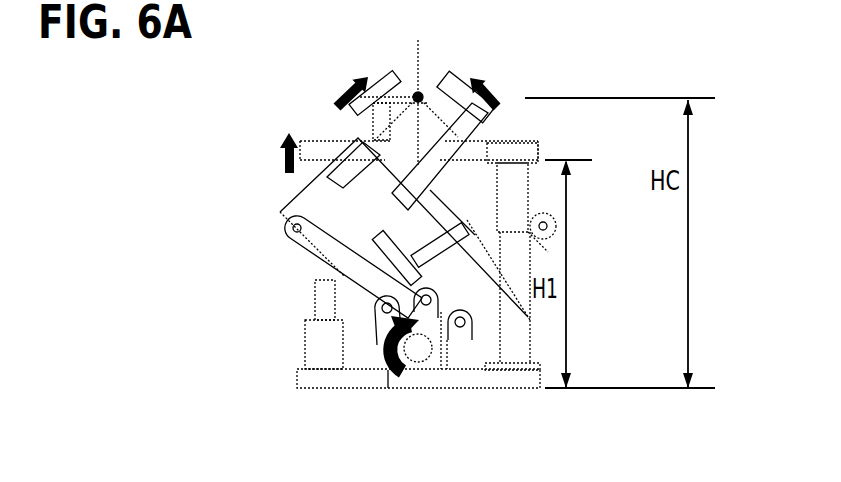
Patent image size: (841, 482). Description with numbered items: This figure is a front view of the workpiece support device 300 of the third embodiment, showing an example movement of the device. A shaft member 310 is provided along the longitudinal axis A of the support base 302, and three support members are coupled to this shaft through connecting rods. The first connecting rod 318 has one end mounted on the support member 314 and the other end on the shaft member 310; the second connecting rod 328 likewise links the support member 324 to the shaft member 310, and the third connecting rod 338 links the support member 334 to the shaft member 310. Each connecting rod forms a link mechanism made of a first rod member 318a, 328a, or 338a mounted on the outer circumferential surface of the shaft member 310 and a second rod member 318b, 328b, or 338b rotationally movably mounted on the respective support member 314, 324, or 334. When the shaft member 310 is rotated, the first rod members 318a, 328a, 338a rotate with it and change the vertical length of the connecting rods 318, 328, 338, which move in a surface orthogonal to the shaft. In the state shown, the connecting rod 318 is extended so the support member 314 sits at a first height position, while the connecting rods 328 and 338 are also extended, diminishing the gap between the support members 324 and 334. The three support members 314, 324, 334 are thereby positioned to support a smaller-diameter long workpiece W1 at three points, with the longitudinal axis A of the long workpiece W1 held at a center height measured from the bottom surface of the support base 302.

The workpiece support device 300 is at (556, 75).
The support base 302 is at (533, 377).
The shaft member 310 is at (417, 350).
The support member 314 is at (382, 127).
The connecting rod 318 is at (435, 298).
The first rod member 318a is at (428, 312).
The second rod member 318b is at (420, 198).
The support member 324 is at (383, 87).
The connecting rod 328 is at (547, 224).
The first rod member 328a is at (465, 331).
The second rod member 328b is at (538, 250).
The support member 334 is at (455, 85).
The connecting rod 338 is at (294, 229).
The first rod member 338a is at (383, 322).
The second rod member 338b is at (310, 243).
The longitudinal axis A is at (417, 95).
The long workpiece W1 is at (418, 95).